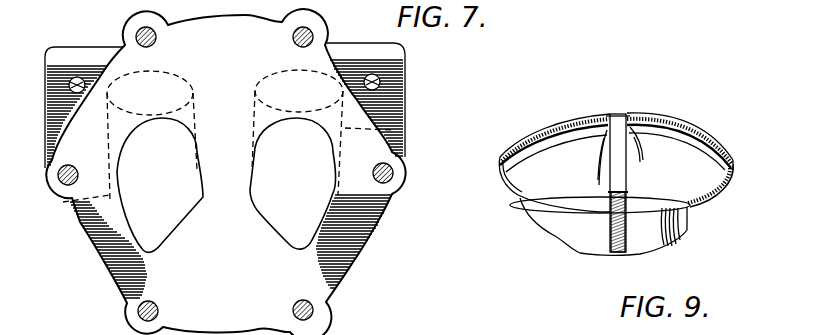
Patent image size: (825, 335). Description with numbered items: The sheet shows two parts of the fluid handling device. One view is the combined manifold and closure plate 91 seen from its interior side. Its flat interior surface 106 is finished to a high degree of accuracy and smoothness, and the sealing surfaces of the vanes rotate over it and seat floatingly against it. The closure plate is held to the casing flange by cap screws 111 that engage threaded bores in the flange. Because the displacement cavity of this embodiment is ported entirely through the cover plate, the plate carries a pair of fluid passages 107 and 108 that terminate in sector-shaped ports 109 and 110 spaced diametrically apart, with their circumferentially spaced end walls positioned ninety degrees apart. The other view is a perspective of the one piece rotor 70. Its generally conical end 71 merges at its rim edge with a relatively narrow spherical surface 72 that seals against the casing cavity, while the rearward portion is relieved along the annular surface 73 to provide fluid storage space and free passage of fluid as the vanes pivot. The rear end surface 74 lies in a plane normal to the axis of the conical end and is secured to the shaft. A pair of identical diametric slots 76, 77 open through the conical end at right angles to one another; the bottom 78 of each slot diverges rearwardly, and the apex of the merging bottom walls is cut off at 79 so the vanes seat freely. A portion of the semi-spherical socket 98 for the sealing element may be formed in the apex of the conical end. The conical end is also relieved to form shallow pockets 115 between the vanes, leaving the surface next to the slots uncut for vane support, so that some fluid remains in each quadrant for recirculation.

In FIG. 7, the closure plate 91 is at (376, 238).
In FIG. 7, the interior surface 106 is at (152, 273).
In FIG. 7, the fluid passage 107 is at (66, 201).
In FIG. 7, the fluid passage 108 is at (395, 130).
In FIG. 7, the port 109 is at (160, 246).
In FIG. 7, the port 110 is at (278, 216).
In FIG. 7, the cap screws 111 is at (394, 175).
In FIG. 9, the rotor 70 is at (713, 200).
In FIG. 9, the conical end 71 is at (640, 140).
In FIG. 9, the spherical surface 72 is at (727, 176).
In FIG. 9, the annular surface 73 is at (562, 235).
In FIG. 9, the rear end surface 74 is at (596, 255).
In FIG. 9, the diametric slot 76 is at (548, 138).
In FIG. 9, the diametric slot 77 is at (615, 113).
In FIG. 9, the slot bottom 78 is at (627, 250).
In FIG. 9, the cut-off apex 79 is at (612, 188).
In FIG. 9, the semi-spherical socket 98 is at (630, 112).
In FIG. 9, the shallow pockets 115 is at (535, 174).